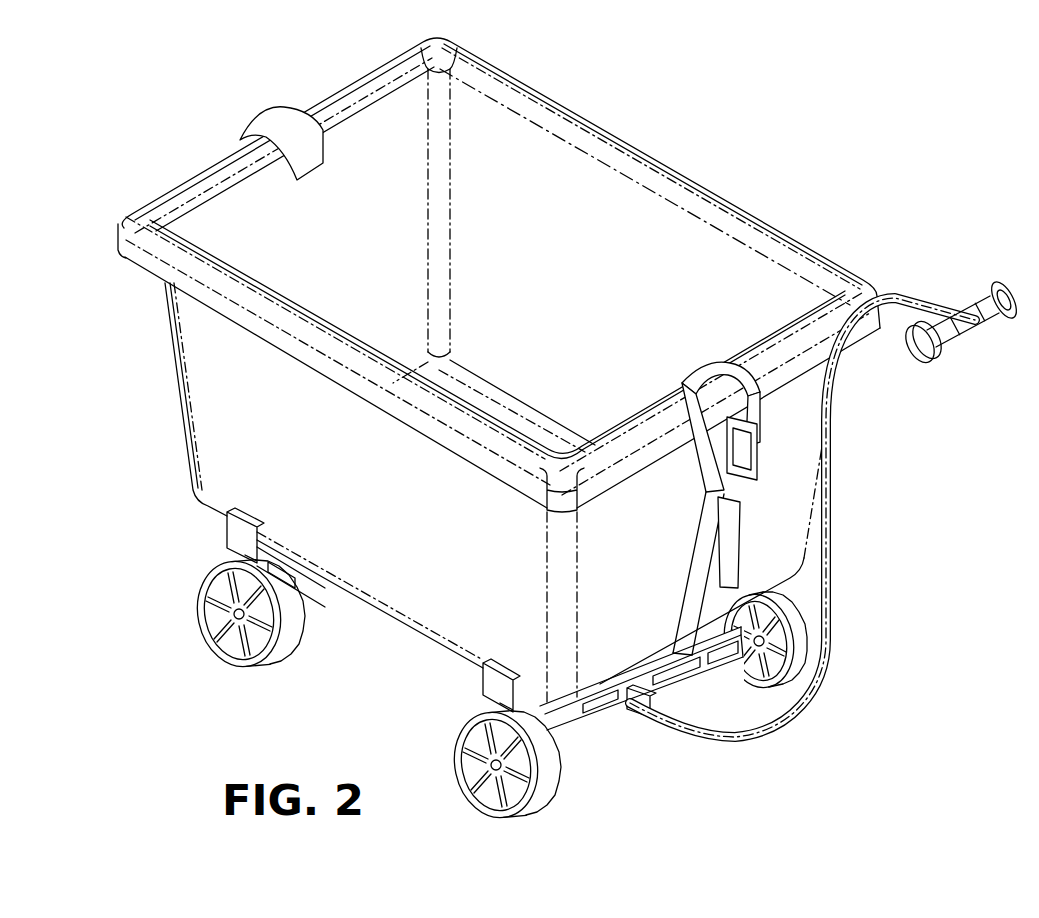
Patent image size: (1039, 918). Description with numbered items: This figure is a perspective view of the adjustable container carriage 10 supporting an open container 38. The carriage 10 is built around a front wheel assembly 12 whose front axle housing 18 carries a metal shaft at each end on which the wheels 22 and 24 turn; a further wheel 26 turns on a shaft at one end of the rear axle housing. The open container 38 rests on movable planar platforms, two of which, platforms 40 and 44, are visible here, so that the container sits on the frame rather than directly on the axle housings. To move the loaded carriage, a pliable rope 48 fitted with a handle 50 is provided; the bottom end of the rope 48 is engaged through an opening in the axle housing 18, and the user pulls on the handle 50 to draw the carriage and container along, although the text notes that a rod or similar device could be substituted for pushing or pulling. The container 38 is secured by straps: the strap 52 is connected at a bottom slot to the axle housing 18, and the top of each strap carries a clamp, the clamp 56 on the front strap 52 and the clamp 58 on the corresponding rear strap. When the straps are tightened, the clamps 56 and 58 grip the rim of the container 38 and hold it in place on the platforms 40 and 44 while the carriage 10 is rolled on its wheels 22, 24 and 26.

The adjustable container carriage 10 is at (660, 773).
The front wheel assembly 12 is at (753, 703).
The front axle housing 18 is at (684, 678).
The wheel 22 is at (550, 784).
The wheel 24 is at (792, 641).
The wheel 26 is at (290, 630).
The open container 38 is at (790, 236).
The movable planar platform 40 is at (552, 760).
The movable planar platform 44 is at (296, 606).
The pliable rope 48 is at (834, 508).
The handle 50 is at (1030, 290).
The strap 52 is at (700, 588).
The clamp 56 is at (720, 368).
The clamp 58 is at (293, 122).